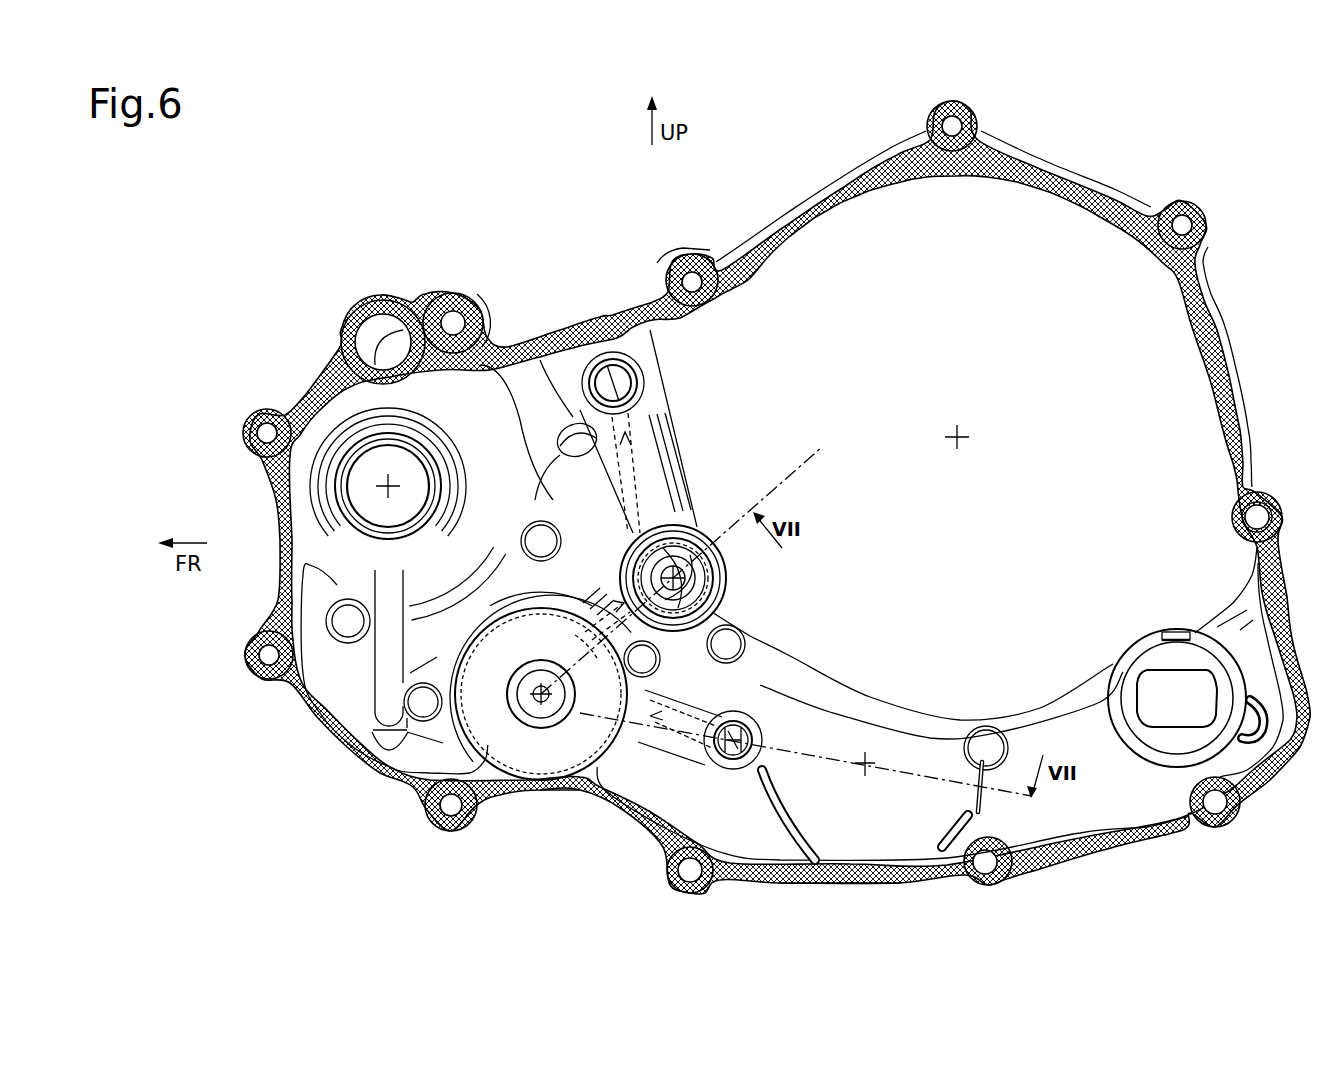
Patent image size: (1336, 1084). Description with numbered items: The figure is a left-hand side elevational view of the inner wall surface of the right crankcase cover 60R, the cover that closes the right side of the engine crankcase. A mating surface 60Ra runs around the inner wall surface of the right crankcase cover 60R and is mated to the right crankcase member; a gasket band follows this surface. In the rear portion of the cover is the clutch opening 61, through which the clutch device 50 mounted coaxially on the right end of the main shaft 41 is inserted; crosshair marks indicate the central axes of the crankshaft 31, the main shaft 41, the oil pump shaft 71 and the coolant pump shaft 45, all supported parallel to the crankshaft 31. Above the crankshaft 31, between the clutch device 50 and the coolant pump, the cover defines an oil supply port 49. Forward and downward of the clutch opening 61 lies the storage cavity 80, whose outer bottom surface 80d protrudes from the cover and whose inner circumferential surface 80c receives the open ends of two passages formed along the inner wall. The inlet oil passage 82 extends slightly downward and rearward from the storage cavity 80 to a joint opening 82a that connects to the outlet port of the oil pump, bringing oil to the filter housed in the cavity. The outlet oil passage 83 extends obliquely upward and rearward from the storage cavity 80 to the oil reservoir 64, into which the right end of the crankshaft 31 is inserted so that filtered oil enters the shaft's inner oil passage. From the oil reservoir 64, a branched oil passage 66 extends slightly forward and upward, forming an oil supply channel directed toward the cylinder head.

The right crankcase cover 60R is at (564, 202).
The mating surface 60Ra is at (573, 326).
The clutch opening 61 is at (1021, 183).
The branched oil passage 66 is at (633, 447).
The crankshaft 31 is at (699, 565).
The main shaft 41 is at (1006, 494).
The clutch device 50 is at (961, 451).
The coolant pump shaft 45 is at (388, 486).
The oil supply port 49 is at (578, 458).
The oil reservoir 64 is at (700, 594).
The outlet oil passage 83 is at (590, 602).
The storage cavity 80 is at (522, 686).
The inner circumferential surface 80c is at (585, 627).
The outer bottom surface 80d is at (540, 697).
The inlet oil passage 82 is at (749, 746).
The joint opening 82a is at (762, 740).
The oil pump shaft 71 is at (865, 766).